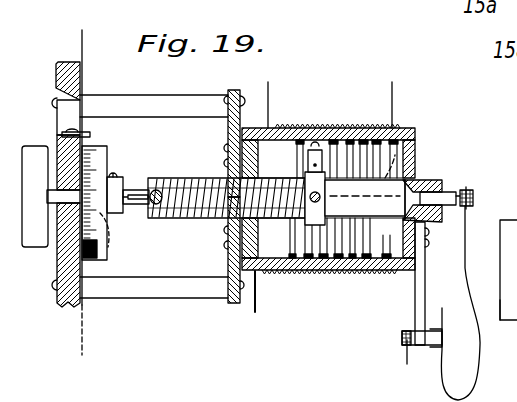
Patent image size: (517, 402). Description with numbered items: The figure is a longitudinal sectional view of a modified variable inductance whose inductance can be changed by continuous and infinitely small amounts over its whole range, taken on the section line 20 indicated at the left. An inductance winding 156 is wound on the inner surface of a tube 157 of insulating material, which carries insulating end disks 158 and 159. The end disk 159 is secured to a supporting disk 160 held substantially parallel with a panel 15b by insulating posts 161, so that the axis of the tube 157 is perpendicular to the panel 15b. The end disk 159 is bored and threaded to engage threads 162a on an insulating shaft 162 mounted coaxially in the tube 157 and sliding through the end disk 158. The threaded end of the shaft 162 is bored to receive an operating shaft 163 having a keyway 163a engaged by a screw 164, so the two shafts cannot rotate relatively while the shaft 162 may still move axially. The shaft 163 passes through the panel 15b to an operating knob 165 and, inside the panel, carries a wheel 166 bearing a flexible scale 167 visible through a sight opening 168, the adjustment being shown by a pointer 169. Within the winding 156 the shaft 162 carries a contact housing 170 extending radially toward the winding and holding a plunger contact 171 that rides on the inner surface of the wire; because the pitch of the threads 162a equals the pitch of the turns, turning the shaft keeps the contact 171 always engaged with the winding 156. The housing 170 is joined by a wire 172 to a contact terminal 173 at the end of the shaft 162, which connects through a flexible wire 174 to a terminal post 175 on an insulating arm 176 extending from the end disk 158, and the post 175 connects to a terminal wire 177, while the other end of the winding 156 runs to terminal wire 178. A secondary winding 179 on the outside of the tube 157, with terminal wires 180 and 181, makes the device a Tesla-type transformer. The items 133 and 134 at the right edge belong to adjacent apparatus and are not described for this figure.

The section line 20 is at (92, 40).
The sight opening 168 is at (57, 86).
The panel 15b is at (63, 306).
The pointer 169 is at (76, 134).
The operating knob 165 is at (35, 244).
The scale of flexible material 167 is at (94, 160).
The wheel 166 is at (111, 224).
The operating shaft 163 is at (134, 206).
The keyway 163a is at (134, 188).
The screw 164 is at (156, 188).
The threads 162a is at (202, 212).
The posts 161 is at (212, 95).
The supporting disk 160 is at (228, 122).
The end disk 159 is at (228, 255).
The terminal wire 178 is at (254, 304).
The shaft 162 is at (322, 272).
The contact housing 170 is at (308, 154).
The secondary winding 179 is at (368, 127).
The plunger contact 171 is at (311, 148).
The terminal wire 181 is at (267, 90).
The terminal wire 180 is at (391, 92).
The tube 157 is at (365, 167).
The inductance winding 156 is at (396, 163).
The end disk 158 is at (414, 157).
The wire 172 is at (420, 165).
The contact terminal 173 is at (448, 207).
The arm 176 is at (415, 294).
The flexible wire 174 is at (466, 312).
The terminal post 175 is at (432, 345).
The terminal wire 177 is at (404, 352).
The box 133 is at (506, 220).
The box 134 is at (502, 327).